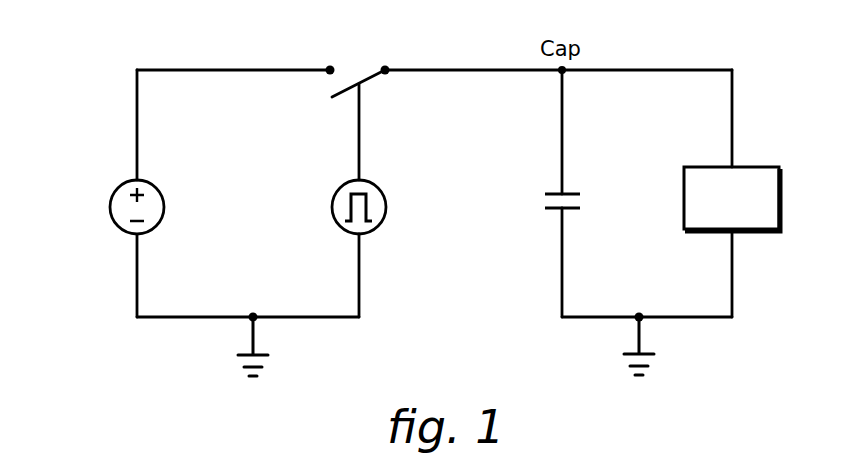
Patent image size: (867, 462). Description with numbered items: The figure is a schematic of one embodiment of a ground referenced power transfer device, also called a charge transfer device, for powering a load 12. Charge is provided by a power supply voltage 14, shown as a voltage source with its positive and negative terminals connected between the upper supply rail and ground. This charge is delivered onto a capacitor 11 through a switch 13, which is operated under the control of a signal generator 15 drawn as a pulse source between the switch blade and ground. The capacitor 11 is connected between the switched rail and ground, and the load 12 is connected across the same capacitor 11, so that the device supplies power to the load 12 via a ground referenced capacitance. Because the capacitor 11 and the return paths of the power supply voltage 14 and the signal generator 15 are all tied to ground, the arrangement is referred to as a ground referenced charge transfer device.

The capacitor 11 is at (546, 212).
The load 12 is at (757, 165).
The switch 13 is at (320, 90).
The power supply voltage 14 is at (108, 234).
The signal generator 15 is at (383, 232).